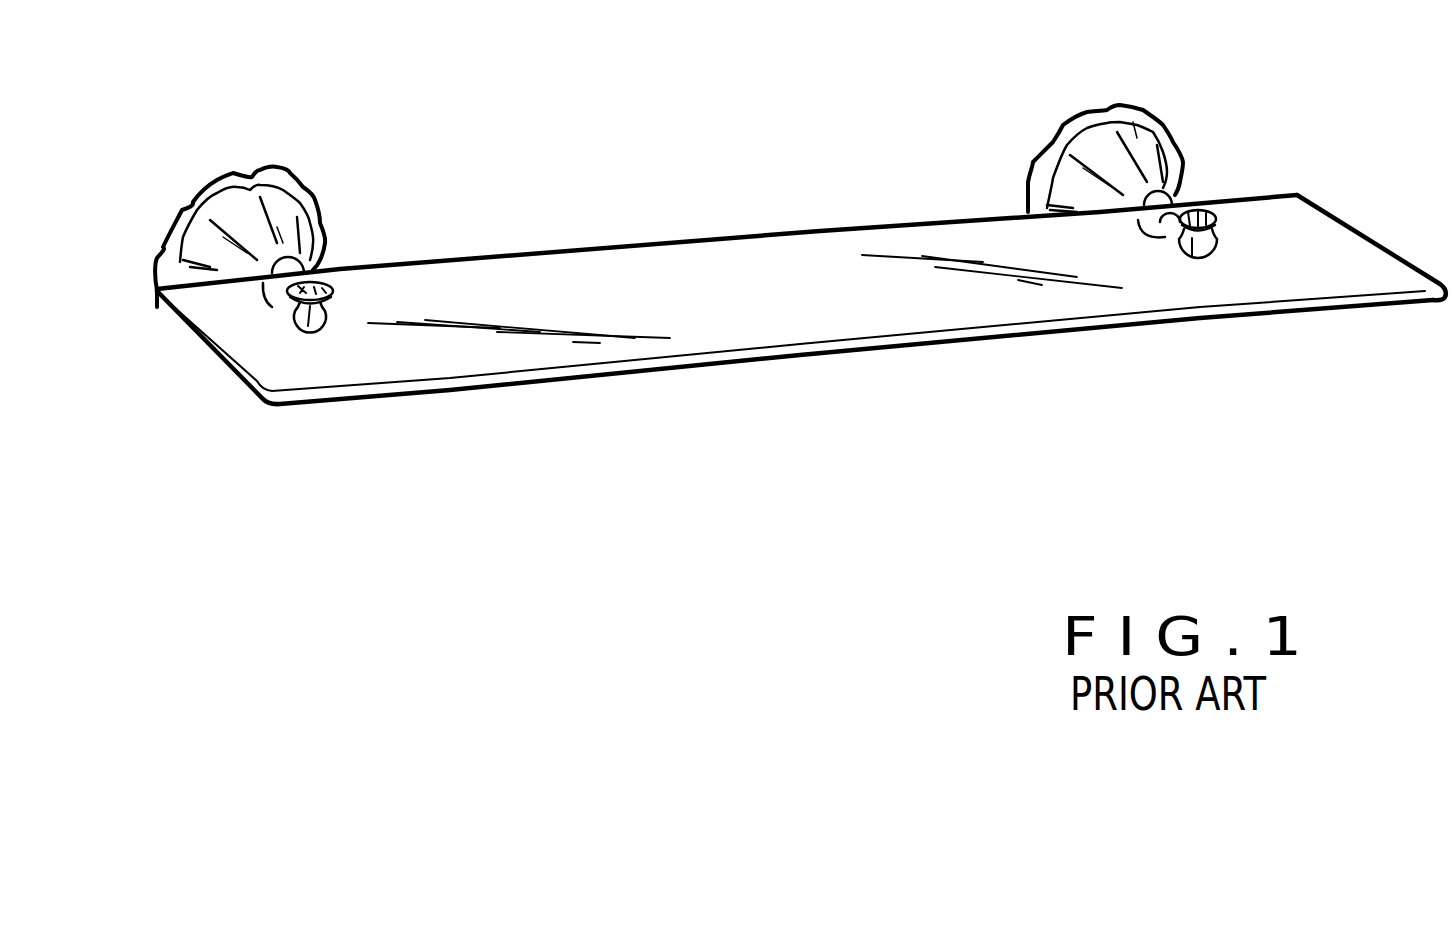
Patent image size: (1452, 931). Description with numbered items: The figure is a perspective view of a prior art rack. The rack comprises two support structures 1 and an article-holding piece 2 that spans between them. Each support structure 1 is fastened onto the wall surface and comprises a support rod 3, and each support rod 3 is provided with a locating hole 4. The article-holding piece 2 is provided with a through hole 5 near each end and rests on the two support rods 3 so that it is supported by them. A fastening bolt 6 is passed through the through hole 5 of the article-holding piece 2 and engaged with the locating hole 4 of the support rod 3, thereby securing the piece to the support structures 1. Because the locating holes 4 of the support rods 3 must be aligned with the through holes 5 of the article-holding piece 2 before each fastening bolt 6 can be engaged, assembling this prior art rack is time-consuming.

The support structure 1 is at (280, 207).
The article-holding piece 2 is at (795, 268).
The support rod 3 is at (305, 328).
The locating hole 4 is at (320, 325).
The through hole 5 is at (333, 305).
The fastening bolt 6 is at (296, 297).